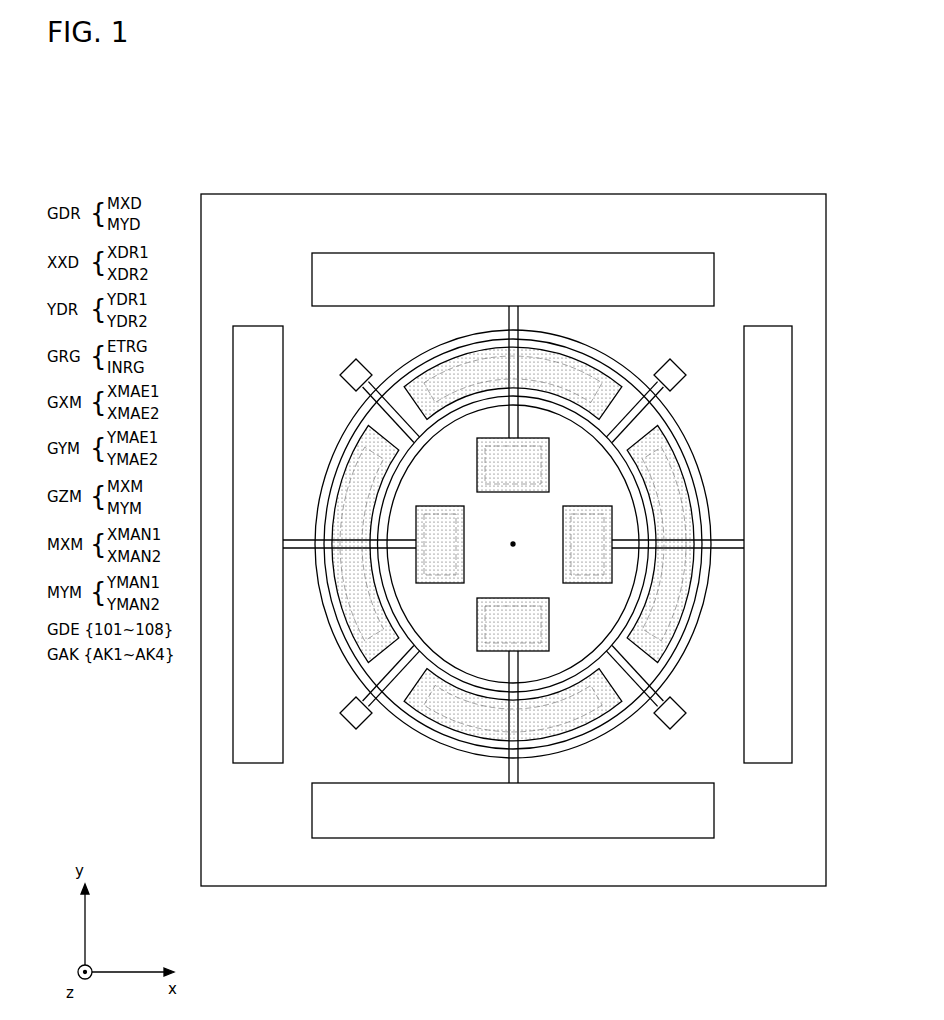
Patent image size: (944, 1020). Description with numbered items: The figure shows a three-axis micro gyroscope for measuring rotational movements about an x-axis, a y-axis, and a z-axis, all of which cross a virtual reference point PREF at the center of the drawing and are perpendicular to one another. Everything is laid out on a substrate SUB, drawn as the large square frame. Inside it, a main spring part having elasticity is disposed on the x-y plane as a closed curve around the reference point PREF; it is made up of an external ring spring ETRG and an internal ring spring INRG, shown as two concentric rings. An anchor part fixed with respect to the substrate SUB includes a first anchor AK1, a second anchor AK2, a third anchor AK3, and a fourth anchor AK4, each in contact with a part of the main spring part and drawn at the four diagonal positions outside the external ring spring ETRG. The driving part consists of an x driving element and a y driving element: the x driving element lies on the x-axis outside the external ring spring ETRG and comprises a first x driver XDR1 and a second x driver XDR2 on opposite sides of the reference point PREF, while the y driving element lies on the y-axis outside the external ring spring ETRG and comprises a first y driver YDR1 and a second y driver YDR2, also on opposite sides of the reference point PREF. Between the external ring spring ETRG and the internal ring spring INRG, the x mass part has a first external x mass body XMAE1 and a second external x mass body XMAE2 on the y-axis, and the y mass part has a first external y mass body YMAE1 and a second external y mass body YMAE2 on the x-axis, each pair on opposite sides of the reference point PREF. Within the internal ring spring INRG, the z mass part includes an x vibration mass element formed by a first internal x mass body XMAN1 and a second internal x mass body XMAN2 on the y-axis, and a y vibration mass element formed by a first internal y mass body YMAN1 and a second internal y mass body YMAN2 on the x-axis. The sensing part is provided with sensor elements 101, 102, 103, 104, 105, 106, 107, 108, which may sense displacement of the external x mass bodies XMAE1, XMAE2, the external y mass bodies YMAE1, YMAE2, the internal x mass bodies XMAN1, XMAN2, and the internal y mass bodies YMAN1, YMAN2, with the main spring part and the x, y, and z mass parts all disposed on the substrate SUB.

The substrate SUB is at (808, 194).
The first y driver YDR1 is at (514, 253).
The second y driver YDR2 is at (514, 838).
The first x driver XDR1 is at (768, 326).
The second x driver XDR2 is at (258, 326).
The external ring spring ETRG is at (672, 418).
The internal ring spring INRG is at (449, 416).
The first anchor AK1 is at (677, 362).
The second anchor AK2 is at (350, 362).
The third anchor AK3 is at (351, 728).
The fourth anchor AK4 is at (678, 728).
The sensor element 101 is at (448, 366).
The sensor element 102 is at (581, 724).
The sensor element 103 is at (349, 624).
The sensor element 104 is at (677, 470).
The sensor element 105 is at (542, 463).
The sensor element 106 is at (488, 627).
The sensor element 107 is at (438, 516).
The sensor element 108 is at (587, 575).
The first external x mass body XMAE1 is at (607, 370).
The second external x mass body XMAE2 is at (430, 718).
The first external y mass body YMAE1 is at (356, 447).
The second external y mass body YMAE2 is at (675, 640).
The first internal x mass body XMAN1 is at (477, 480).
The second internal x mass body XMAN2 is at (549, 608).
The first internal y mass body YMAN1 is at (440, 583).
The second internal y mass body YMAN2 is at (587, 506).
The reference point PREF is at (513, 545).